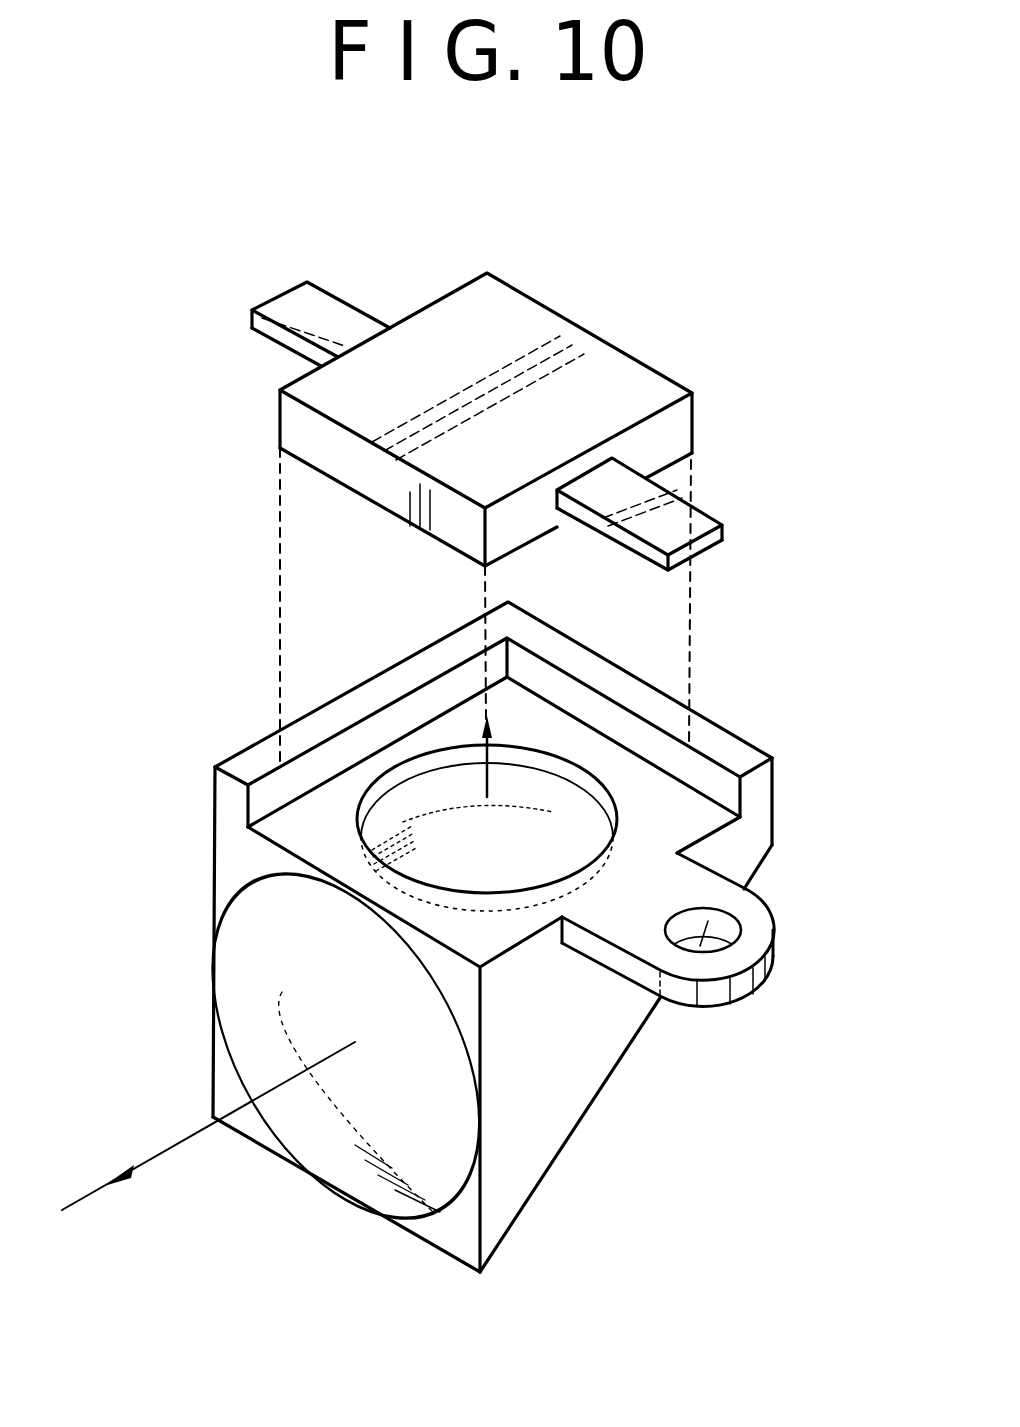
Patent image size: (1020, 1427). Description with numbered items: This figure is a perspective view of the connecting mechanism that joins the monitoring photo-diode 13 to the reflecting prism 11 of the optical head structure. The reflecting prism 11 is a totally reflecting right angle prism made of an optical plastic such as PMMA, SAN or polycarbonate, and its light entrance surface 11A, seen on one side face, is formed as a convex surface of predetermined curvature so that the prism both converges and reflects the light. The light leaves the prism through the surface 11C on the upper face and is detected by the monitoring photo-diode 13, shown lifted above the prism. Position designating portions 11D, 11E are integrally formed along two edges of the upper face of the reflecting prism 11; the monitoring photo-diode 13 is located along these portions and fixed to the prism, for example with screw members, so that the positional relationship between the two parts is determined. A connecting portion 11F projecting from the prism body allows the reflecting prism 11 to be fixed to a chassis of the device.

The monitoring photo-diode 13 is at (617, 373).
The reflecting prism 11 is at (477, 949).
The surface 11A is at (355, 1169).
The surface 11C is at (433, 790).
The position designating portion 11D is at (727, 740).
The position designating portion 11E is at (242, 762).
The connecting portion 11F is at (760, 927).